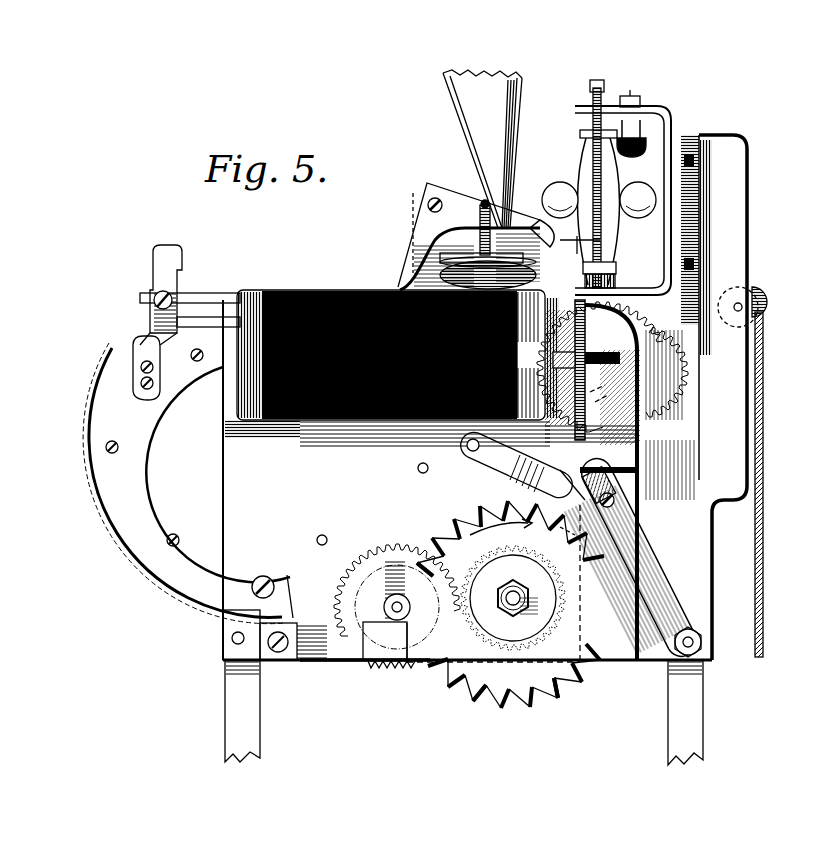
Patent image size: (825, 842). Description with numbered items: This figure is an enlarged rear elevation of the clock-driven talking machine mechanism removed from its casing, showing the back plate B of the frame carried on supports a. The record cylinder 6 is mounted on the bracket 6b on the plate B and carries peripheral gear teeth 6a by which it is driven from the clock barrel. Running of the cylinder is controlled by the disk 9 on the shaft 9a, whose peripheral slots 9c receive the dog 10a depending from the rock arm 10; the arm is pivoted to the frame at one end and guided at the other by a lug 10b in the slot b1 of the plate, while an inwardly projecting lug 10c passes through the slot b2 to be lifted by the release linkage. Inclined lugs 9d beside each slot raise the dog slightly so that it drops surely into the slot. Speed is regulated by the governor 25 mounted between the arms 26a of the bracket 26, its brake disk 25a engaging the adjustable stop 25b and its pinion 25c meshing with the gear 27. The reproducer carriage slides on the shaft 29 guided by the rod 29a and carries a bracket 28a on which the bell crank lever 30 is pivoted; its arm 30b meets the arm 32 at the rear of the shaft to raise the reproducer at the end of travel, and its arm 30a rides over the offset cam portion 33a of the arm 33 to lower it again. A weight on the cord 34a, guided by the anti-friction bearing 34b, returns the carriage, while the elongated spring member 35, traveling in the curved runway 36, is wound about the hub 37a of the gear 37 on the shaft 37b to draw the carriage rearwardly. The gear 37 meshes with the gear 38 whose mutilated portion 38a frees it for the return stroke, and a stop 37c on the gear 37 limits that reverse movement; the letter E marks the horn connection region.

The record cylinder 6 is at (226, 386).
The peripheral gear teeth 6a is at (598, 377).
The bracket 6b is at (586, 377).
The disk 9 is at (455, 510).
The shaft 9a is at (515, 588).
The peripheral slots 9c is at (528, 705).
The inclined lugs 9d is at (478, 690).
The rock arm 10 is at (650, 585).
The dog 10a is at (619, 504).
The lug 10b is at (453, 444).
The inwardly projecting lug 10c is at (575, 501).
The governor 25 is at (599, 184).
The brake disk 25a is at (580, 136).
The adjustable stop 25b is at (646, 143).
The pinion 25c is at (583, 270).
The bracket 26 is at (672, 222).
The arms 26a is at (652, 108).
The gear 27 is at (668, 400).
The bracket 28a is at (413, 213).
The shaft 29 is at (213, 330).
The rod 29a is at (210, 294).
The bell crank lever 30 is at (413, 238).
The arm 30a is at (483, 203).
The arm 30b is at (410, 253).
The upwardly projecting arm 32 is at (183, 262).
The inwardly extended arm 33 is at (574, 244).
The offset cam portion 33a is at (548, 210).
The cord 34a is at (764, 472).
The anti-friction bearing 34b is at (764, 300).
The elongated spring member 35 is at (82, 470).
The curved runway 36 is at (142, 493).
The gear 37 is at (338, 610).
The hub 37a is at (372, 680).
The shaft 37b is at (383, 607).
The stop 37c is at (410, 670).
The gear 38 is at (485, 556).
The mutilated portion 38a is at (499, 597).
The supports a is at (226, 712).
The back plate B is at (467, 480).
The funnel E is at (474, 149).
The slot b1 is at (517, 464).
The slot b2 is at (572, 474).